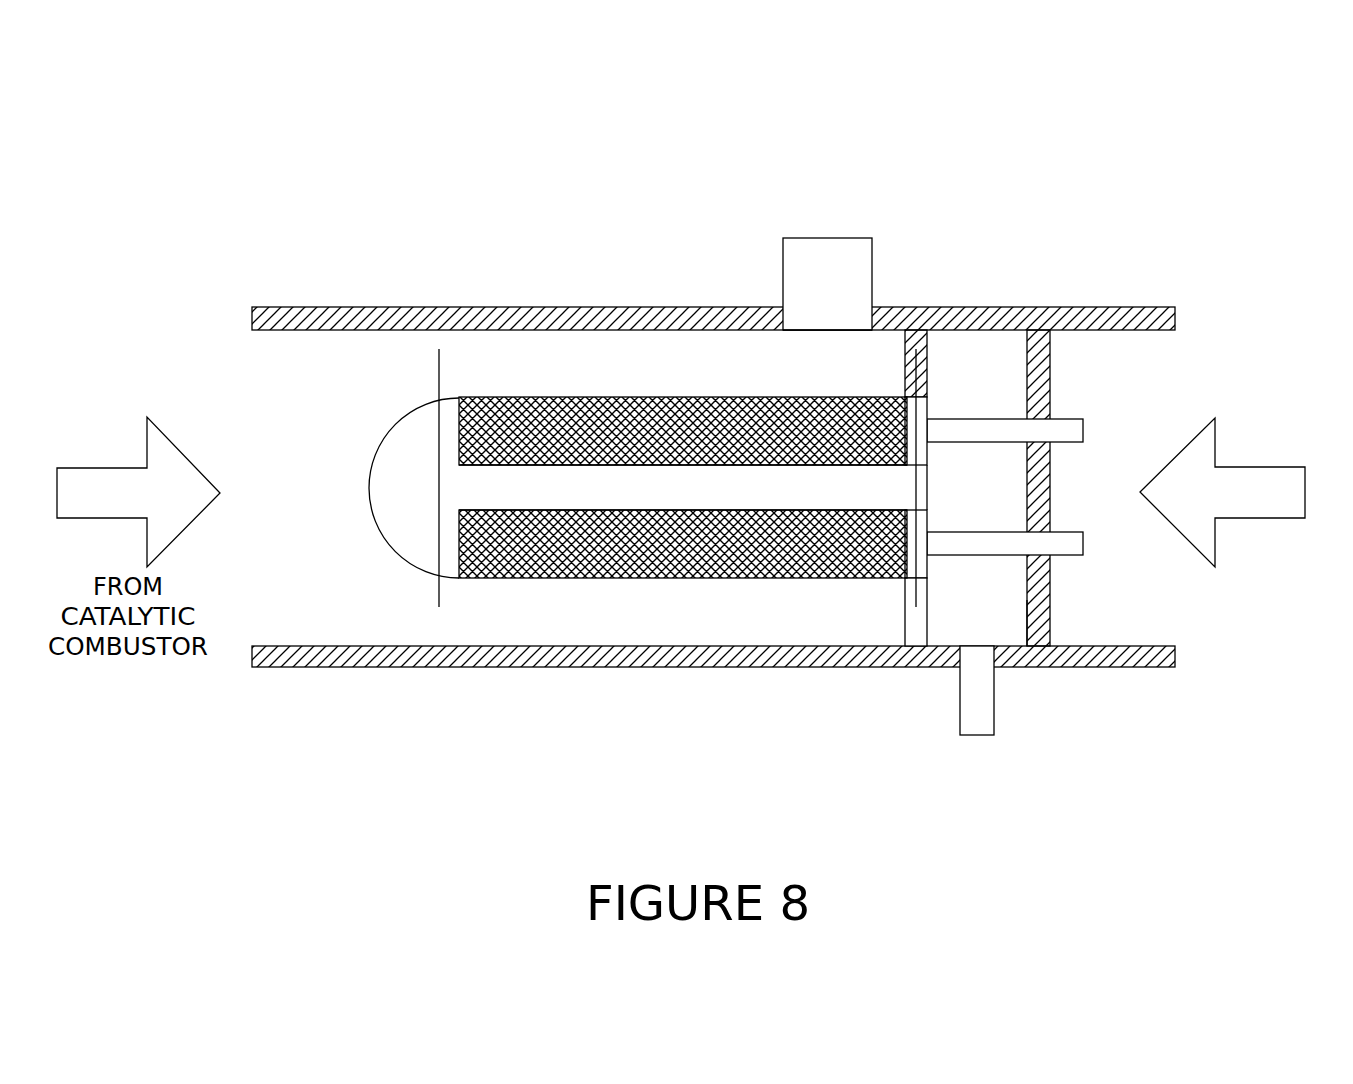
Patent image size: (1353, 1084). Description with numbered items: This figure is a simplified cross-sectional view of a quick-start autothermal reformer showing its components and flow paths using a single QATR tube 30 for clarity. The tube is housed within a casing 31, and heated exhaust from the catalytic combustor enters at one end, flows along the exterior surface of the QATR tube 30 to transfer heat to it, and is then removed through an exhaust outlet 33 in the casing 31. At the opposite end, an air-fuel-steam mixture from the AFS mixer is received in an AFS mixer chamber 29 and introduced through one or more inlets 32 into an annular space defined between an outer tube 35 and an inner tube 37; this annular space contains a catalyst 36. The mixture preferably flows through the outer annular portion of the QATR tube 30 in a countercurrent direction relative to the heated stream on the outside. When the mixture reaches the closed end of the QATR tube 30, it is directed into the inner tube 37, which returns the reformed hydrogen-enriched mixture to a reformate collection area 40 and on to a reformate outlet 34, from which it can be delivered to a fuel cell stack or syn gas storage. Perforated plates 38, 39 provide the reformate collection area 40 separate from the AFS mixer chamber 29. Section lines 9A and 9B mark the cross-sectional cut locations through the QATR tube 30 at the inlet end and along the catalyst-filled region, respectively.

The AFS mixer chamber 29 is at (1151, 450).
The QATR tube 30 is at (370, 490).
The casing 31 is at (330, 304).
The inlet 32 is at (1089, 543).
The exhaust outlet 33 is at (877, 275).
The reformate outlet 34 is at (958, 697).
The outer tube 35 is at (658, 484).
The catalyst 36 is at (728, 424).
The inner tube 37 is at (630, 468).
The perforated plate 38 is at (930, 366).
The perforated plate 39 is at (1055, 619).
The reformate collection area 40 is at (1009, 581).
The section line 9A is at (916, 349).
The section line 9B is at (439, 349).